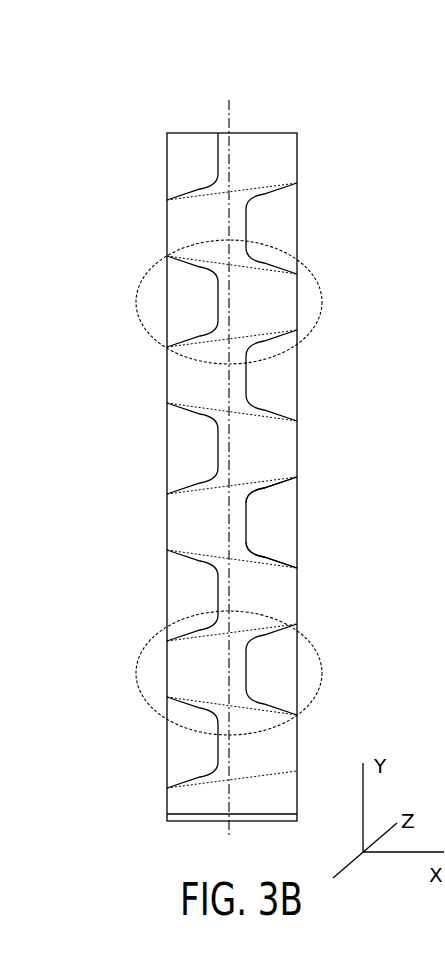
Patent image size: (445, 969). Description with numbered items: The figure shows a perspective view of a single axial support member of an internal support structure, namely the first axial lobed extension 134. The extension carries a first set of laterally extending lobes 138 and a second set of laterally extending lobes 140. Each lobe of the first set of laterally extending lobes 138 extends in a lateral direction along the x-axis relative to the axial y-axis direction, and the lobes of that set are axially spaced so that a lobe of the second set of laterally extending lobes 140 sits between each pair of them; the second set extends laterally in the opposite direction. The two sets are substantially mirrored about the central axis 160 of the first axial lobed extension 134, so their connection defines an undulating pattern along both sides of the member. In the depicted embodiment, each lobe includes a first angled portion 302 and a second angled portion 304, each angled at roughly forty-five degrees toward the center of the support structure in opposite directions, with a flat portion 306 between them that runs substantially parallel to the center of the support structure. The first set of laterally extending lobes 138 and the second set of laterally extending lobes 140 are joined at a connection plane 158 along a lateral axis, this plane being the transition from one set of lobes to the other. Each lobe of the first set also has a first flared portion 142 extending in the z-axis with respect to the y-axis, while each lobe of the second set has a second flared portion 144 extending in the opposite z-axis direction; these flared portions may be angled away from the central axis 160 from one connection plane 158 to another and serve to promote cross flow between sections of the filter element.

The first axial lobed extension 134 is at (264, 100).
The first set of laterally extending lobes 138 is at (148, 272).
The second set of laterally extending lobes 140 is at (167, 520).
The first flared portion 142 is at (282, 593).
The second flared portion 144 is at (190, 383).
The connection plane 158 is at (285, 478).
The central axis 160 is at (238, 837).
The first angled portion 302 is at (276, 279).
The second angled portion 304 is at (265, 330).
The flat portion 306 is at (293, 307).